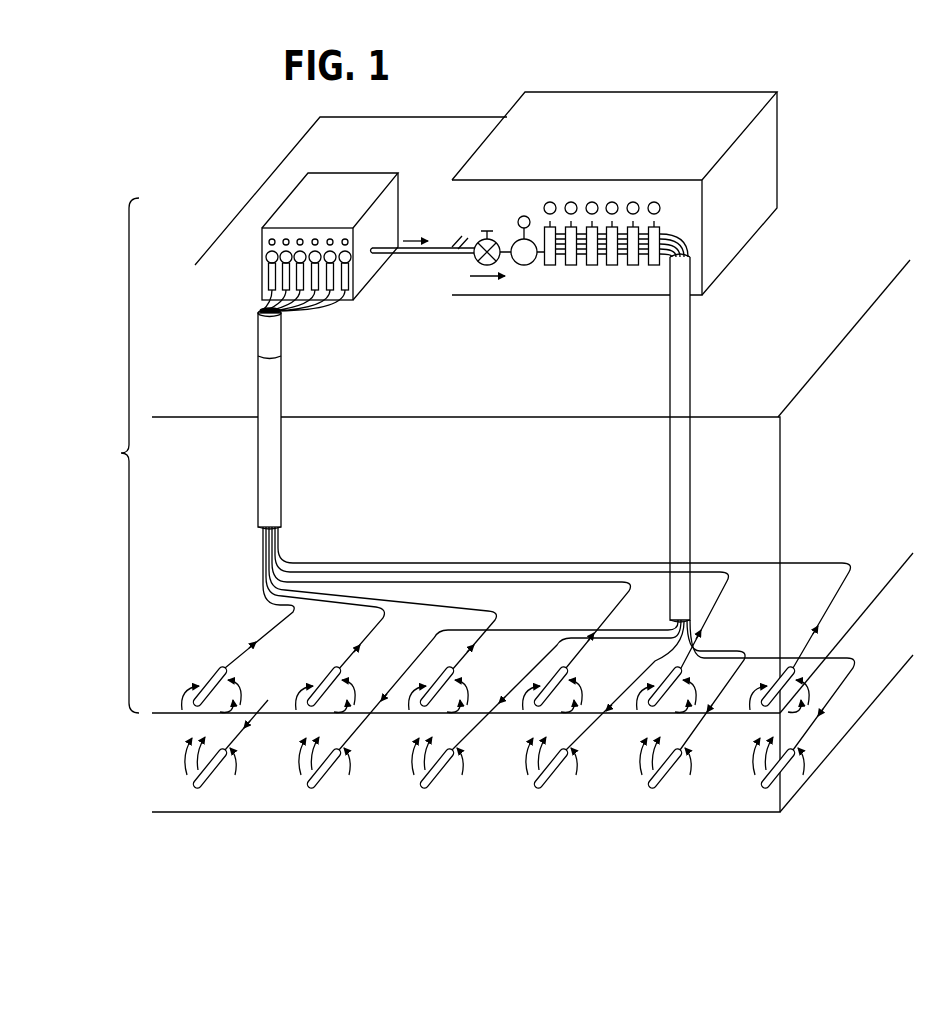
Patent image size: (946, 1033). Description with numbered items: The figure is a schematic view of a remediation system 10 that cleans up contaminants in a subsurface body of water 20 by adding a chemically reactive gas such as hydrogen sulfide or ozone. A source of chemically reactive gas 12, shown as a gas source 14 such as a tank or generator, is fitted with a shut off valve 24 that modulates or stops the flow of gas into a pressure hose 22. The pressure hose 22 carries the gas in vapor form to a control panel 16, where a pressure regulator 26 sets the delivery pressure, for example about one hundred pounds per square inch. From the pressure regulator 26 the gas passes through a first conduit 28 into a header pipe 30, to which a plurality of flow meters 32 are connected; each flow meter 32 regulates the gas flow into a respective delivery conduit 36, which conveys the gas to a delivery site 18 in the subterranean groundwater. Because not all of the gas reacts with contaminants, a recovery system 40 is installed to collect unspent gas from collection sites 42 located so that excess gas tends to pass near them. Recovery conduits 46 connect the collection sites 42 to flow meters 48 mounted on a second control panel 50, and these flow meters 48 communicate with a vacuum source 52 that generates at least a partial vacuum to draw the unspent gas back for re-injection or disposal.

The remediation system 10 is at (477, 84).
The source of chemically reactive gas 12 is at (853, 90).
The gas source 14 is at (757, 202).
The control panel 16 is at (462, 190).
The delivery sites 18 is at (217, 782).
The subsurface body of water 20 is at (624, 788).
The pressure hose 22 is at (441, 256).
The shut off valve 24 is at (478, 268).
The pressure regulator 26 is at (526, 266).
The first conduit 28 is at (501, 240).
The header pipe 30 is at (538, 240).
The flow meters 32 is at (663, 277).
The delivery conduit 36 is at (268, 701).
The recovery system 40 is at (112, 455).
The collection sites 42 is at (210, 685).
The recovery conduits 46 is at (382, 612).
The flow meters 48 is at (349, 280).
The control panel 50 is at (330, 302).
The vacuum source 52 is at (340, 214).